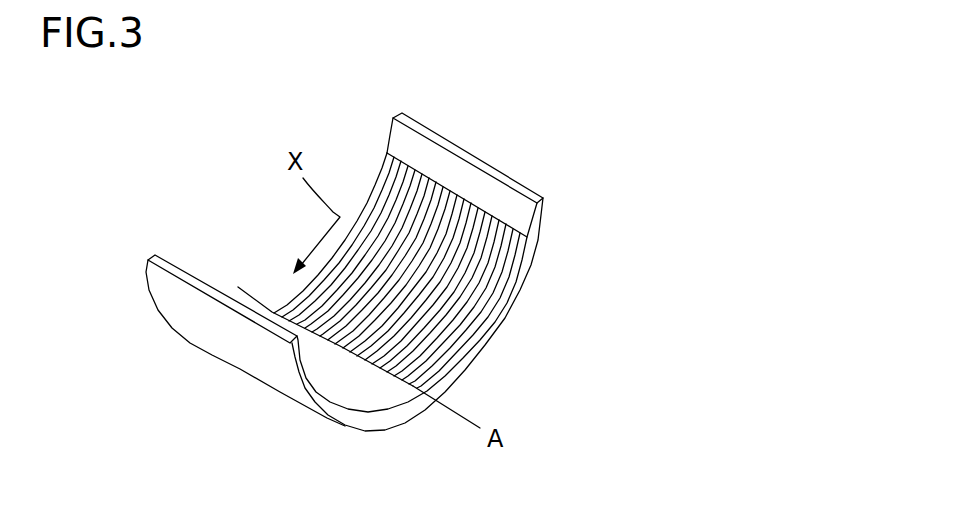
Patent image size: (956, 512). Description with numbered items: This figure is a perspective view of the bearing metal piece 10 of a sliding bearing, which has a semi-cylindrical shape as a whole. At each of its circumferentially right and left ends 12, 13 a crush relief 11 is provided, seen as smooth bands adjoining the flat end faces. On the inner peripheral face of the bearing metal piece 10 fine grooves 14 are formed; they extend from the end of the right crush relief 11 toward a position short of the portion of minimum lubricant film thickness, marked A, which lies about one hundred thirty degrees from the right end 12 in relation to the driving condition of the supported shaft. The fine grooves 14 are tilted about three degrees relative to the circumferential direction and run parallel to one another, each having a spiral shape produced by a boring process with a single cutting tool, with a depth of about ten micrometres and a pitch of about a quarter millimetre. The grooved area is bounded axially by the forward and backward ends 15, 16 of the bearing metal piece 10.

The bearing metal piece 10 is at (265, 220).
The crush relief 11 is at (473, 184).
The right end 12 is at (513, 180).
The left end 13 is at (217, 288).
The fine grooves 14 is at (430, 333).
The axially forward end 15 is at (508, 316).
The axially backward end 16 is at (385, 176).